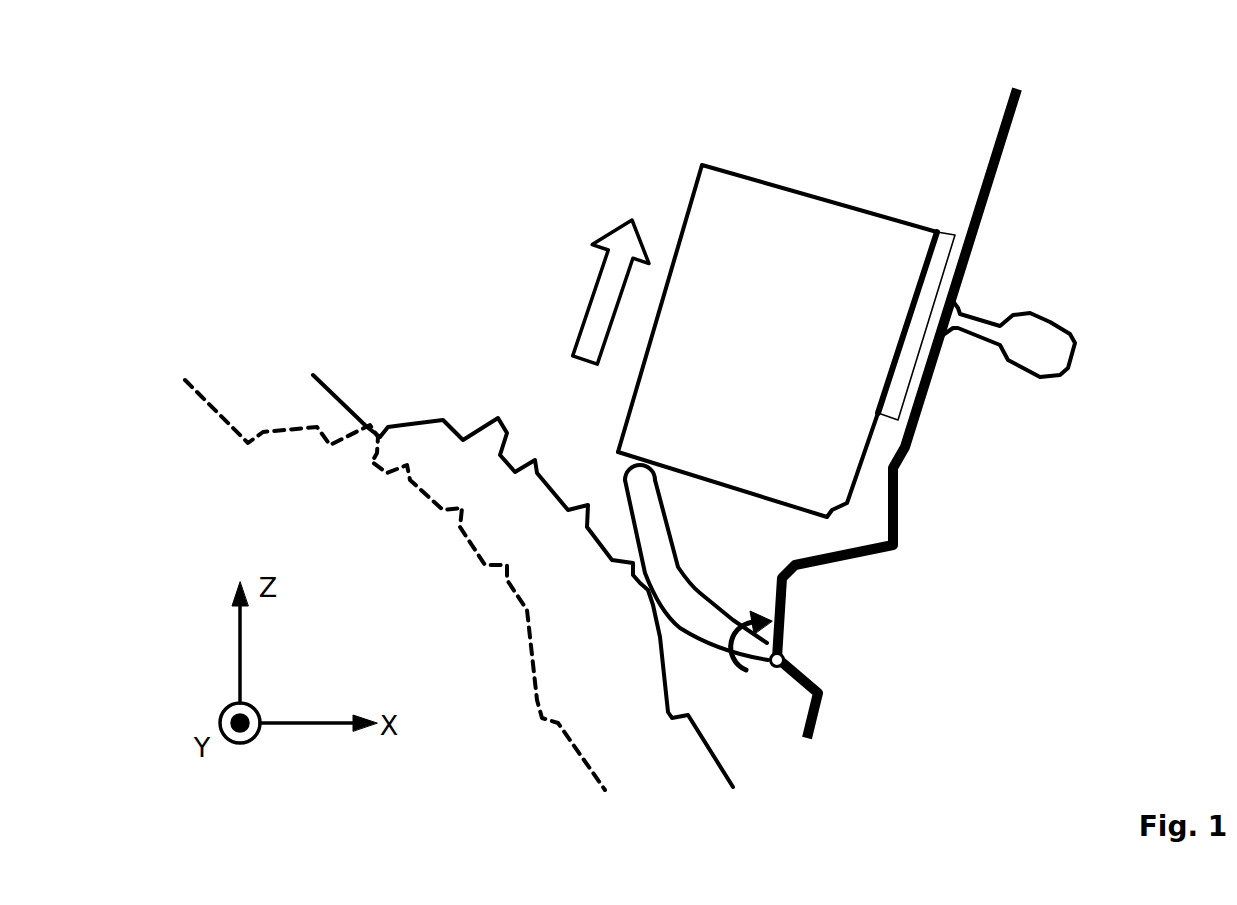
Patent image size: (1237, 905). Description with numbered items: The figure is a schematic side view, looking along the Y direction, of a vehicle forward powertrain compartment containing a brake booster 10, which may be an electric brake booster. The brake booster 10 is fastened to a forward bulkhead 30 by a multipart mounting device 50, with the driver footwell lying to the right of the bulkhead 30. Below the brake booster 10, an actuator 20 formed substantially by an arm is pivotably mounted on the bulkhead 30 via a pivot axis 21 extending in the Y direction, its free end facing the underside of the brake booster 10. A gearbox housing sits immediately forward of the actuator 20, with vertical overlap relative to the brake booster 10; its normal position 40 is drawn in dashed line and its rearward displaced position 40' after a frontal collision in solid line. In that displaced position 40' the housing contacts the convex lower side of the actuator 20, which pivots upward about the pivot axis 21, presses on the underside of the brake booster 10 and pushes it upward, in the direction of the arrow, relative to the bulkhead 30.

The brake booster 10 is at (733, 187).
The actuator 20 is at (688, 552).
The pivot axis 21 is at (758, 698).
The forward bulkhead 30 is at (857, 562).
The gearbox housing in normal position 40 is at (395, 540).
The gearbox housing in displaced position 40' is at (523, 538).
The mounting device 50 is at (947, 240).